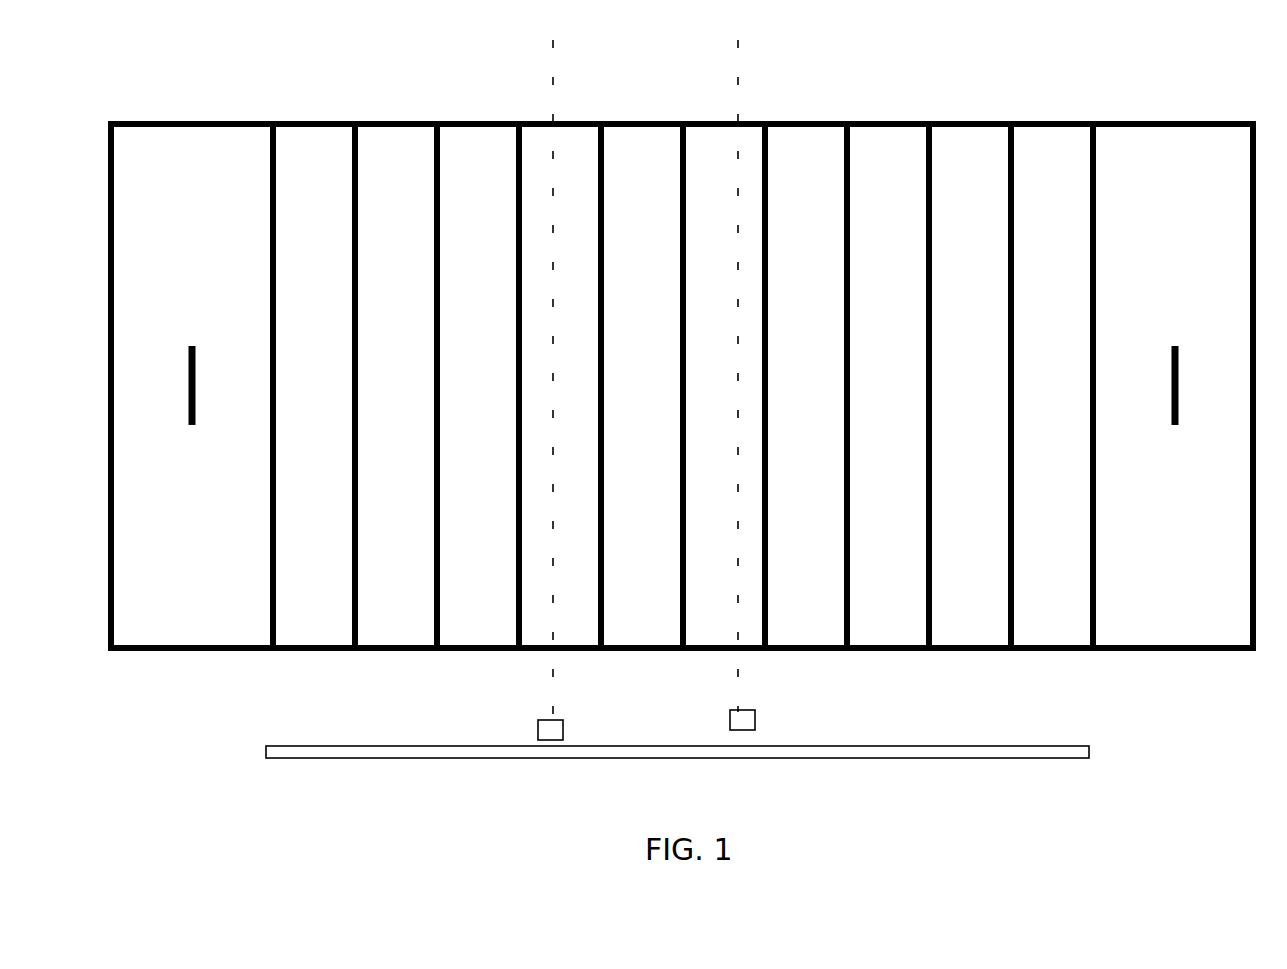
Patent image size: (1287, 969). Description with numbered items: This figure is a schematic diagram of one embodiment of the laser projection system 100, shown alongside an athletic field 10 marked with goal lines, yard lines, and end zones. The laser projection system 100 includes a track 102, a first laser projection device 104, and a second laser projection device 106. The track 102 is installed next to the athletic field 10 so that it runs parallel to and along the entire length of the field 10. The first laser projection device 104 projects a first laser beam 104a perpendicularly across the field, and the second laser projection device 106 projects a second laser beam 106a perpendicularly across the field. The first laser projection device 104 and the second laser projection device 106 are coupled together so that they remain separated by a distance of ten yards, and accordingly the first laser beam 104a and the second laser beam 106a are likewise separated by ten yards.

The athletic field 10 is at (1216, 100).
The laser projection system 100 is at (1124, 796).
The track 102 is at (286, 753).
The first laser projection device 104 is at (561, 740).
The second laser projection device 106 is at (755, 722).
The first laser beam 104a is at (553, 67).
The second laser beam 106a is at (737, 82).